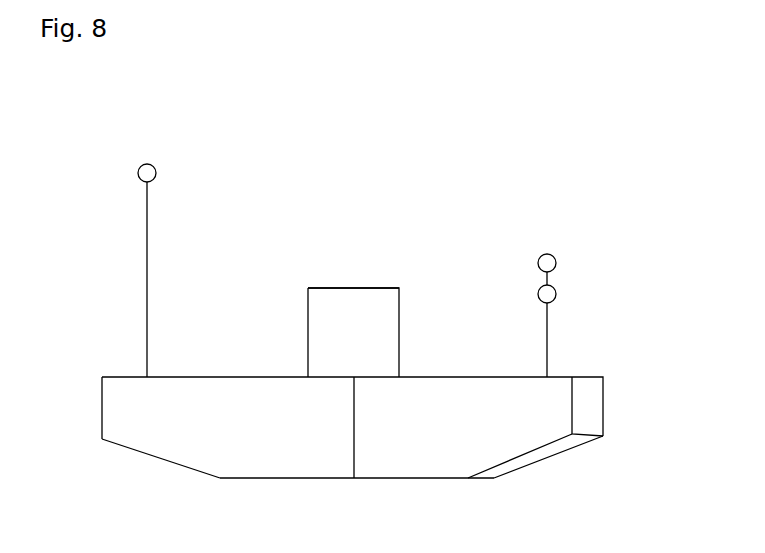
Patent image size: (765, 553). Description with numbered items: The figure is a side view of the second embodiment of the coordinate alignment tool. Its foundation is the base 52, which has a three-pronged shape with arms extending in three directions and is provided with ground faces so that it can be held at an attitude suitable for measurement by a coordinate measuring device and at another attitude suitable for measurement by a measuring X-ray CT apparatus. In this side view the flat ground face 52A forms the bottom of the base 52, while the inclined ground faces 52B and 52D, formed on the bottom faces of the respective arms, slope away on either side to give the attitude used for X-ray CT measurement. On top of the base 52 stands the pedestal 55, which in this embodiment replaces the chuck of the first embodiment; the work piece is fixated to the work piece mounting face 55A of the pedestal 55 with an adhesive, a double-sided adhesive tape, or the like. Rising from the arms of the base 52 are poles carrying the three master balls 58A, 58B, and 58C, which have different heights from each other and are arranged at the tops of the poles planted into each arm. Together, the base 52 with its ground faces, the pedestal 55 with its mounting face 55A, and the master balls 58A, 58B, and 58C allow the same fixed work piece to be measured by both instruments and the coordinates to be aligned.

The base 52 is at (603, 413).
The ground face 52A is at (283, 480).
The inclined ground face 52B is at (155, 458).
The inclined ground face 52D is at (543, 455).
The pedestal 55 is at (400, 317).
The work piece mounting face 55A is at (345, 288).
The master ball 58A is at (156, 172).
The master ball 58B is at (556, 262).
The master ball 58C is at (556, 293).